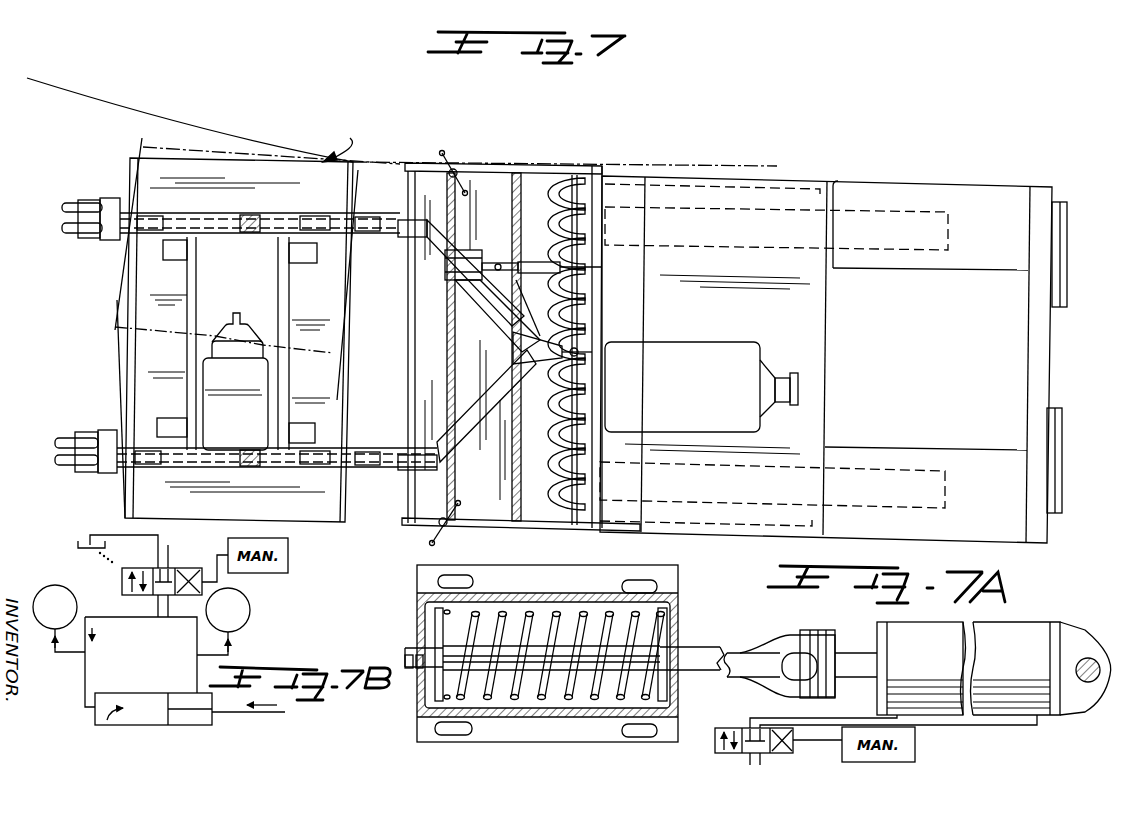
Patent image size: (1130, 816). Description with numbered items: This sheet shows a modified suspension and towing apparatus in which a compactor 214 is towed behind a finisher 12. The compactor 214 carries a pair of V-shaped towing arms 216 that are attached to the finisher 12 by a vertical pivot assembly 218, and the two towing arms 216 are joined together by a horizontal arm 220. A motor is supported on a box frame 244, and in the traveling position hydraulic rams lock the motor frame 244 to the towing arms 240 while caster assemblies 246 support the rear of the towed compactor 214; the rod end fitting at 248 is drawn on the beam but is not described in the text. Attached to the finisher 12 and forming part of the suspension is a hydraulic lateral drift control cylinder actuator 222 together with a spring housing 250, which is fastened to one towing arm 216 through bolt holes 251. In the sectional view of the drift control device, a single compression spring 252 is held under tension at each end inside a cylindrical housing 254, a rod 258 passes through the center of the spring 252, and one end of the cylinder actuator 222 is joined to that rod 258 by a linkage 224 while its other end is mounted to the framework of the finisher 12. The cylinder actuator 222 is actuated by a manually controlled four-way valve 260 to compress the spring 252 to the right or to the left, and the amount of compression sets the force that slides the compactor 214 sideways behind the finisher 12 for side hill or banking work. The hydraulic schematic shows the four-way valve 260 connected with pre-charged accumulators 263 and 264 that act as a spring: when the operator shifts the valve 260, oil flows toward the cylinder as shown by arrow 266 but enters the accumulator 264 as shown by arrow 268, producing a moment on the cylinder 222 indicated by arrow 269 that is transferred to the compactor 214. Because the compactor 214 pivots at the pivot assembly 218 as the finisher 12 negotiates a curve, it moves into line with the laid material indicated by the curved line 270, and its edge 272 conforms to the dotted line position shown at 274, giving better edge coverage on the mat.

In FIG. 7, the finisher 12 is at (777, 170).
In FIG. 7, the compactor 214 is at (329, 143).
In FIG. 7, the V-shaped towing arms 216 is at (433, 243).
In FIG. 7, the vertical pivot assembly 218 is at (580, 352).
In FIG. 7, the horizontal arm 220 is at (447, 342).
In FIG. 7, the hydraulic lateral drift control cylinder actuator 222 is at (512, 318).
In FIG. 7B, the hydraulic lateral drift control cylinder actuator 222 is at (147, 693).
In FIG. 7A, the hydraulic lateral drift control cylinder actuator 222 is at (1032, 661).
In FIG. 7, the linkage 224 is at (503, 261).
In FIG. 7A, the linkage 224 is at (846, 613).
In FIG. 7, the towing arms 240 is at (403, 220).
In FIG. 7, the box frame 244 is at (243, 213).
In FIG. 7, the caster assemblies 246 is at (133, 232).
In FIG. 7, the rod end 248 is at (63, 208).
In FIG. 7, the spring housing 250 is at (473, 252).
In FIG. 7A, the spring housing 250 is at (524, 585).
In FIG. 7A, the bolt holes 251 is at (636, 580).
In FIG. 7A, the compression spring 252 is at (665, 601).
In FIG. 7A, the cylindrical housing 254 is at (436, 620).
In FIG. 7A, the rod 258 is at (560, 646).
In FIG. 7B, the four-way valve 260 is at (173, 568).
In FIG. 7A, the four-way valve 260 is at (732, 728).
In FIG. 7B, the accumulator 263 is at (250, 602).
In FIG. 7B, the accumulator 264 is at (100, 574).
In FIG. 7B, the arrow 266 is at (141, 662).
In FIG. 7B, the arrow 268 is at (54, 652).
In FIG. 7B, the arrow 269 is at (107, 720).
In FIG. 7, the curved line 270 is at (70, 104).
In FIG. 7, the edge of the compactor 272 is at (168, 159).
In FIG. 7, the dotted line position of the compactor 274 is at (141, 147).